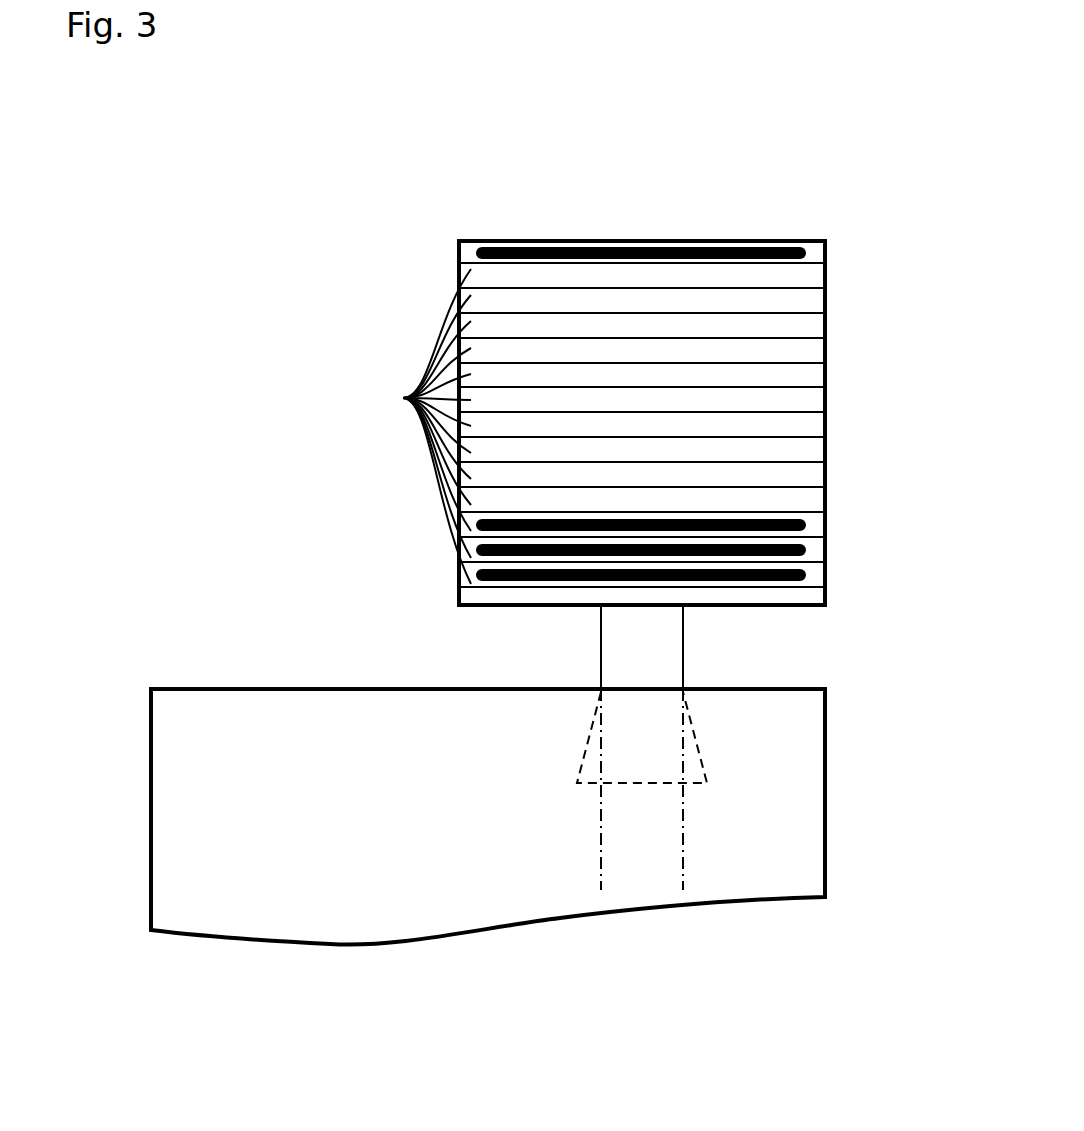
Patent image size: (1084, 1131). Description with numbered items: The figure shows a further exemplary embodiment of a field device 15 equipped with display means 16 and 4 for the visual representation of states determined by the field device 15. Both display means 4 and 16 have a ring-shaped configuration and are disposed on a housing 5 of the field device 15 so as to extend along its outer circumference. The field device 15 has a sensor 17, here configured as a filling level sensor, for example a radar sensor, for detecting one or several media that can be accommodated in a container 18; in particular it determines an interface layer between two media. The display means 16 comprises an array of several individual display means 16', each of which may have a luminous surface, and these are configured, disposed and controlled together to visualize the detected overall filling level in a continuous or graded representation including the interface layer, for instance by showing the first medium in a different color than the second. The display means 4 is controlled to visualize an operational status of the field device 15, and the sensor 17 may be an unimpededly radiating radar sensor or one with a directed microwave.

The display means 4 is at (815, 251).
The housing 5 is at (457, 241).
The field device 15 is at (266, 334).
The display means 16 is at (698, 425).
The individual display means 16' is at (404, 427).
The sensor 17 is at (667, 767).
The container 18 is at (205, 689).